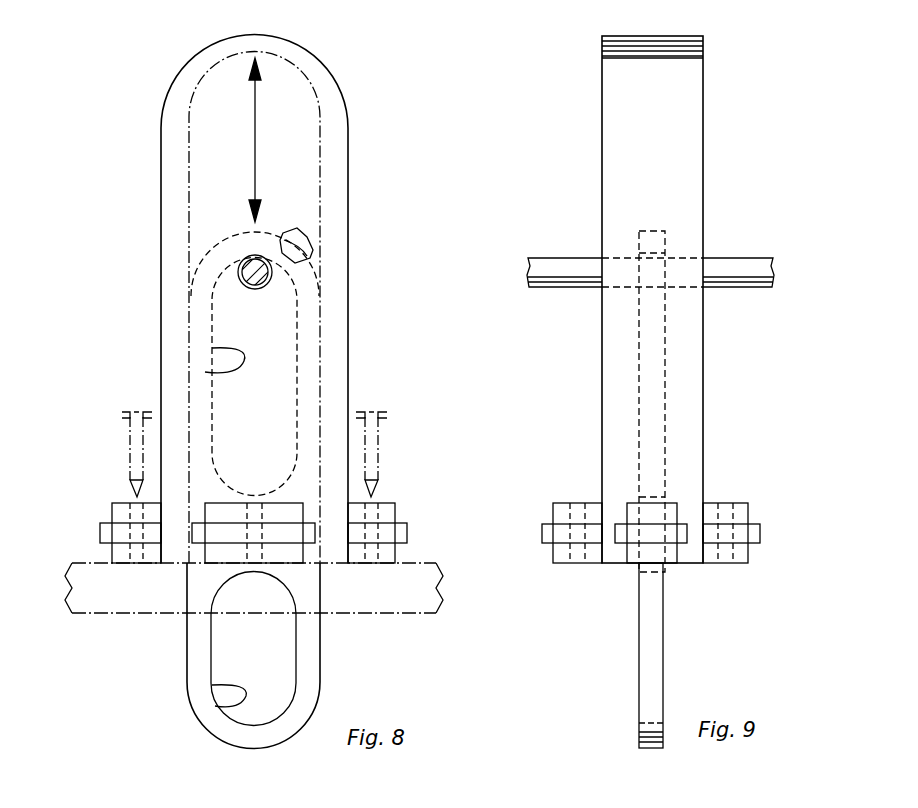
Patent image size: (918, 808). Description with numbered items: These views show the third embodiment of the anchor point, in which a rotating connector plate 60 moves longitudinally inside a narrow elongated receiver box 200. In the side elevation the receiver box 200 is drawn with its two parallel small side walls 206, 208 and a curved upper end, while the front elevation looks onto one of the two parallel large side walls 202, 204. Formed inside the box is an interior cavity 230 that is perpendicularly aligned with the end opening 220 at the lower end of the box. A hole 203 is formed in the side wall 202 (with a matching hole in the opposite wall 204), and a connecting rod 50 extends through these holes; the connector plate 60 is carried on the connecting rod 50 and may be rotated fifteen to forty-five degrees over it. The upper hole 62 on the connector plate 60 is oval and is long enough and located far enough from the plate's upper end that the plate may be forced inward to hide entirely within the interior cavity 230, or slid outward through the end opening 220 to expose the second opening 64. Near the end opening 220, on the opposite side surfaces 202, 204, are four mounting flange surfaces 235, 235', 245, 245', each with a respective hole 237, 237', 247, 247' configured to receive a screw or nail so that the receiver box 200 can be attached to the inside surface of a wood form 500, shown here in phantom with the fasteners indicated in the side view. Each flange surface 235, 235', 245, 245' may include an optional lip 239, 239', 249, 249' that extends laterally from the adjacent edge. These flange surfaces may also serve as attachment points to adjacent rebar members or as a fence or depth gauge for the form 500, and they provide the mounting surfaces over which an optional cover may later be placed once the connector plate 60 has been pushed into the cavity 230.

In FIG. 8, the elongated receiver box 200 is at (175, 53).
In FIG. 8, the large side wall 202 is at (232, 157).
In FIG. 9, the large side wall 202 is at (602, 100).
In FIG. 8, the hole 203 is at (270, 278).
In FIG. 9, the large side wall 204 is at (703, 96).
In FIG. 8, the small side wall 206 is at (348, 160).
In FIG. 8, the small side wall 208 is at (160, 190).
In FIG. 8, the end opening 220 is at (210, 571).
In FIG. 8, the interior cavity 230 is at (316, 243).
In FIG. 8, the mounting flange surface 235 is at (254, 381).
In FIG. 9, the mounting flange surface 235 is at (555, 514).
In FIG. 9, the mounting flange surface 235' is at (761, 513).
In FIG. 8, the hole 237 is at (254, 503).
In FIG. 9, the hole 237 is at (580, 586).
In FIG. 9, the hole 237' is at (770, 586).
In FIG. 8, the lip 239 is at (291, 565).
In FIG. 9, the lip 239 is at (542, 549).
In FIG. 9, the lip 239' is at (763, 525).
In FIG. 8, the mounting flange surface 245 is at (74, 513).
In FIG. 8, the mounting flange surface 245' is at (429, 513).
In FIG. 9, the mounting flange surface 245' is at (717, 470).
In FIG. 8, the hole 247 is at (95, 487).
In FIG. 8, the hole 247' is at (399, 487).
In FIG. 9, the hole 247' is at (603, 492).
In FIG. 8, the lip 249 is at (95, 539).
In FIG. 8, the lip 249' is at (412, 539).
In FIG. 9, the lip 249' is at (637, 587).
In FIG. 8, the connecting rod 50 is at (240, 273).
In FIG. 9, the connecting rod 50 is at (570, 265).
In FIG. 8, the connector plate 60 is at (307, 657).
In FIG. 9, the connector plate 60 is at (668, 618).
In FIG. 8, the upper hole 62 is at (205, 372).
In FIG. 8, the second opening 64 is at (215, 706).
In FIG. 8, the wood form 500 is at (403, 583).